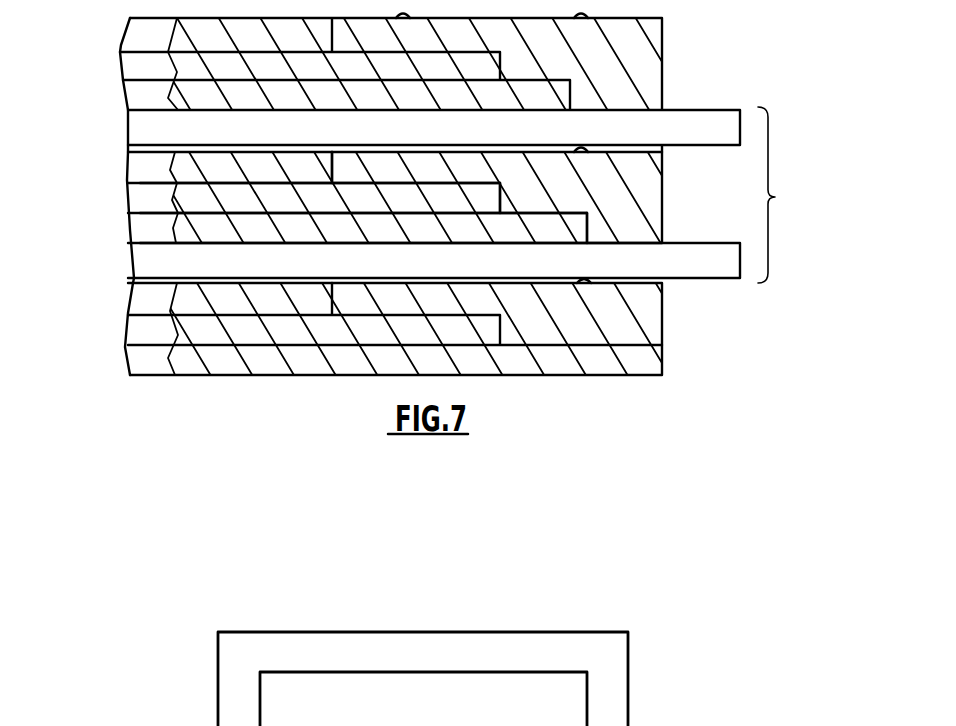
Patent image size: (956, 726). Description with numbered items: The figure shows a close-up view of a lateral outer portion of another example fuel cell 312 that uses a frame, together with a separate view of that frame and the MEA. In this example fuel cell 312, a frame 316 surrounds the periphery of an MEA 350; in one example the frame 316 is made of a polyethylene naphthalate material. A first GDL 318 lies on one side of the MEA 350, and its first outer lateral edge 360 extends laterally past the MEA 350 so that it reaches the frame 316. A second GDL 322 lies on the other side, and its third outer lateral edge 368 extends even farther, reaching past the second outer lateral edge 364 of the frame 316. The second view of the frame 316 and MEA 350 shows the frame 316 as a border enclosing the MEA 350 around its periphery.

In FIG. 7, the fuel cell 312 is at (775, 197).
In FIG. 7, the frame 316 is at (408, 203).
In FIG. 8, the frame 316 is at (610, 713).
In FIG. 7, the first GDL 318 is at (140, 167).
In FIG. 7, the second GDL 322 is at (140, 230).
In FIG. 7, the MEA 350 is at (140, 193).
In FIG. 8, the MEA 350 is at (518, 707).
In FIG. 7, the first outer lateral edge 360 is at (333, 155).
In FIG. 7, the second outer lateral edge 364 is at (512, 205).
In FIG. 7, the third outer lateral edge 368 is at (589, 223).